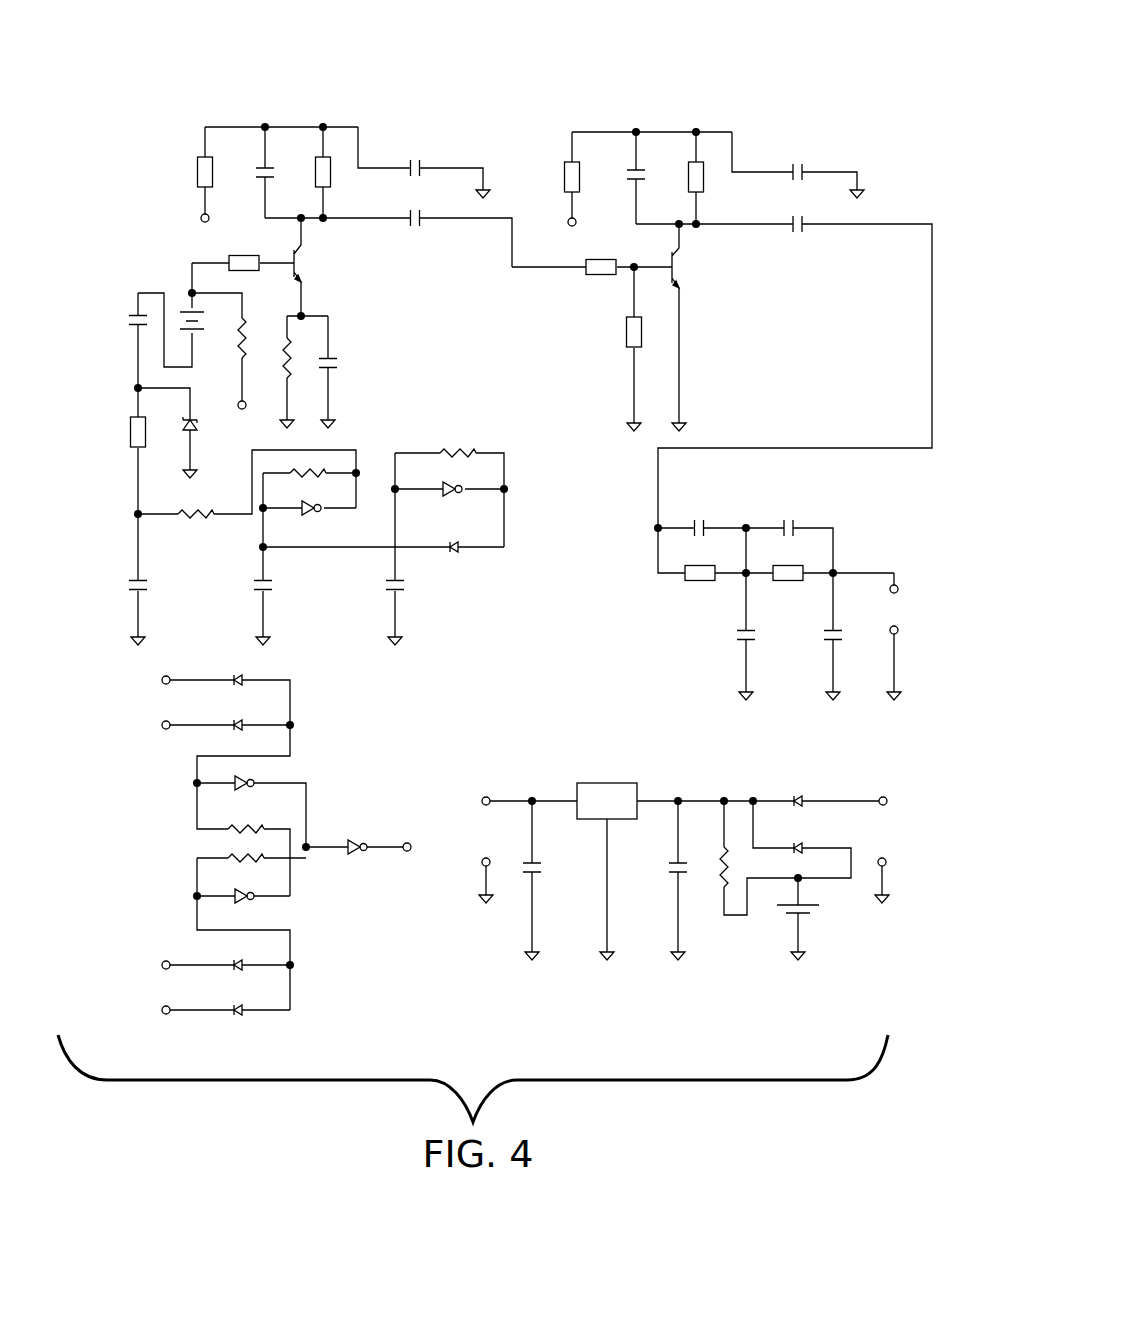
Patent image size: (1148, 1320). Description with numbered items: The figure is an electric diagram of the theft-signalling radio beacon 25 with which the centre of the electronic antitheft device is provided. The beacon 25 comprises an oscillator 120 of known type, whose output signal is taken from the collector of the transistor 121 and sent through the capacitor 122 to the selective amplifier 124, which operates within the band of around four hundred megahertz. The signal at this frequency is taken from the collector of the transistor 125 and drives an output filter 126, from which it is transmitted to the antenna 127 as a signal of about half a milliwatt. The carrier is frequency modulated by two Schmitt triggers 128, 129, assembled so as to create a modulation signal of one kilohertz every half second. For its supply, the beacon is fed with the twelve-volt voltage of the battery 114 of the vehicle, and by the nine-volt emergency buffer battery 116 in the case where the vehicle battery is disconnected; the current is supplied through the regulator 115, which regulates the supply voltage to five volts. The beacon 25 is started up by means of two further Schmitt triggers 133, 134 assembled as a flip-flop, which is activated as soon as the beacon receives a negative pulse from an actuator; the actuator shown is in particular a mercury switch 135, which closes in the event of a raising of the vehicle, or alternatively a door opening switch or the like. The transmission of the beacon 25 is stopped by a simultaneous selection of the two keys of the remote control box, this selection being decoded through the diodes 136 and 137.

The radio beacon 25 is at (237, 102).
The oscillator 120 is at (184, 271).
The transistor 121 is at (298, 273).
The capacitor 122 is at (423, 224).
The selective amplifier 124 is at (745, 131).
The transistor 125 is at (680, 252).
The output filter 126 is at (805, 519).
The antenna 127 is at (907, 602).
The Schmitt trigger 128 is at (362, 449).
The Schmitt trigger 129 is at (466, 443).
The Schmitt trigger 133 is at (238, 790).
The Schmitt trigger 134 is at (238, 903).
The mercury switch 135 is at (166, 1015).
The diode 136 is at (240, 678).
The diode 137 is at (242, 728).
The battery 114 is at (884, 878).
The regulator 115 is at (617, 793).
The emergency buffer battery 116 is at (800, 928).